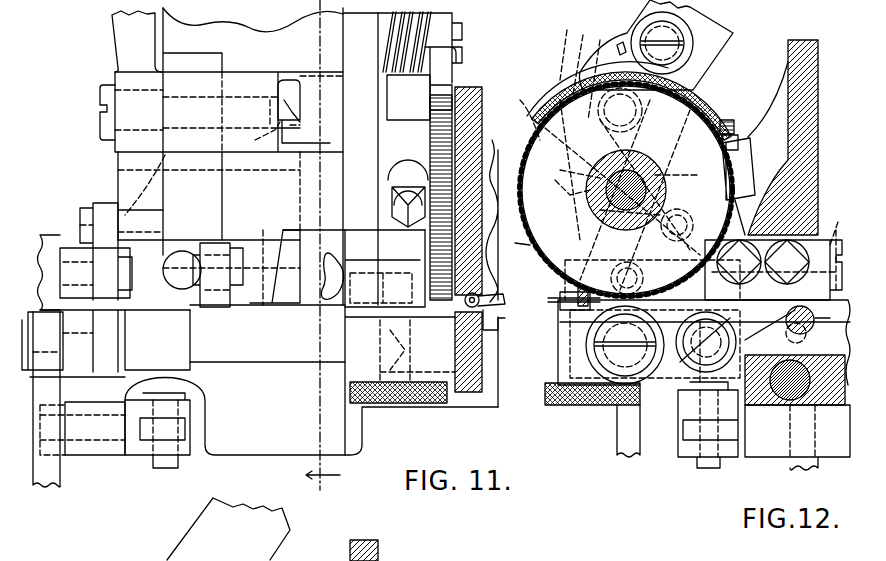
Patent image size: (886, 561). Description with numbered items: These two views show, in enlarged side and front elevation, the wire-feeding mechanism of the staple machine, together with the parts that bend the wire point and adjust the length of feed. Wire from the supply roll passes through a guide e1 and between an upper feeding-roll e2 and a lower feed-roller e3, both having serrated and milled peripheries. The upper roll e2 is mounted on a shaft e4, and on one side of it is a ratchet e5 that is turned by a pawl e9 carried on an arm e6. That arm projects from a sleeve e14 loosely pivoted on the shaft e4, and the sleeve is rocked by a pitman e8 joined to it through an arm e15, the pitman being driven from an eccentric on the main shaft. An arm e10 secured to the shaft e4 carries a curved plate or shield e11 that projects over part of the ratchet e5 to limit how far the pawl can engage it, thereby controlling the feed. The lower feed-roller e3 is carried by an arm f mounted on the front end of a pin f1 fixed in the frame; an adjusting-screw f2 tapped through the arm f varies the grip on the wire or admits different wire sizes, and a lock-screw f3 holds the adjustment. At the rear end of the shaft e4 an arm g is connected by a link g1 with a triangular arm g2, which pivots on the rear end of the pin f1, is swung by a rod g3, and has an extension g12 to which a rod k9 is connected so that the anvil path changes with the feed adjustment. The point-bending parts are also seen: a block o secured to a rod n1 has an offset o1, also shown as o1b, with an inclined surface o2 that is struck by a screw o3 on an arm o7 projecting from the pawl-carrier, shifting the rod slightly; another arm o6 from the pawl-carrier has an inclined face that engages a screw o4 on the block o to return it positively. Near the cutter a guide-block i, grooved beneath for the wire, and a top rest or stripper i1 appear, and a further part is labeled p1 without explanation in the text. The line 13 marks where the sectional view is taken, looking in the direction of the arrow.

In FIG. 11, the section line 13 is at (323, 256).
In FIG. 11, the pitman e8 is at (201, 285).
In FIG. 12, the pitman e8 is at (528, 125).
In FIG. 11, the sleeve e14 is at (330, 160).
In FIG. 12, the sleeve e14 is at (600, 212).
In FIG. 11, the offset o1 is at (290, 118).
In FIG. 11, the arm e15 is at (264, 125).
In FIG. 12, the arm e15 is at (559, 49).
In FIG. 11, the arm e10 is at (390, 136).
In FIG. 12, the arm e10 is at (570, 175).
In FIG. 11, the pawl e9 is at (445, 76).
In FIG. 12, the pawl e9 is at (588, 70).
In FIG. 11, the ratchet e5 is at (440, 135).
In FIG. 12, the ratchet e5 is at (512, 238).
In FIG. 11, the curved plate or shield e11 is at (440, 107).
In FIG. 12, the curved plate or shield e11 is at (520, 97).
In FIG. 11, the upper feeding-roll e2 is at (456, 110).
In FIG. 12, the upper feeding-roll e2 is at (538, 120).
In FIG. 11, the lower feed-roller e3 is at (468, 403).
In FIG. 12, the lower feed-roller e3 is at (655, 400).
In FIG. 11, the shaft e4 is at (494, 170).
In FIG. 12, the shaft e4 is at (678, 170).
In FIG. 11, the guide e1 is at (480, 292).
In FIG. 12, the guide e1 is at (520, 280).
In FIG. 11, the arm g is at (130, 185).
In FIG. 12, the arm g is at (626, 190).
In FIG. 11, the link g1 is at (100, 258).
In FIG. 12, the link g1 is at (652, 194).
In FIG. 11, the triangular arm g2 is at (75, 305).
In FIG. 11, the screw o4 is at (182, 270).
In FIG. 11, the rod n1 is at (180, 285).
In FIG. 11, the block o is at (237, 300).
In FIG. 12, the block o is at (779, 259).
In FIG. 11, the arm o6 is at (252, 310).
In FIG. 11, the offset o1b is at (298, 310).
In FIG. 11, the inclined surface o2 is at (293, 262).
In FIG. 11, the lock-screw f3 is at (337, 263).
In FIG. 12, the lock-screw f3 is at (562, 282).
In FIG. 11, the arm f is at (360, 378).
In FIG. 12, the arm f is at (568, 357).
In FIG. 11, the pin f1 is at (246, 360).
In FIG. 12, the pin f1 is at (670, 372).
In FIG. 11, the adjusting-screw f2 is at (405, 403).
In FIG. 12, the adjusting-screw f2 is at (578, 405).
In FIG. 11, the rod k9 is at (185, 428).
In FIG. 12, the rod k9 is at (722, 440).
In FIG. 11, the extension g12 is at (83, 398).
In FIG. 12, the extension g12 is at (797, 437).
In FIG. 11, the rod g3 is at (60, 478).
In FIG. 12, the rod g3 is at (622, 448).
In FIG. 12, the arm e6 is at (690, 78).
In FIG. 12, the arm o7 is at (752, 150).
In FIG. 12, the screw o3 is at (742, 186).
In FIG. 12, the pin p' p1 is at (840, 244).
In FIG. 12, the guide-block i is at (742, 312).
In FIG. 12, the top rest or stripper i1 is at (811, 324).